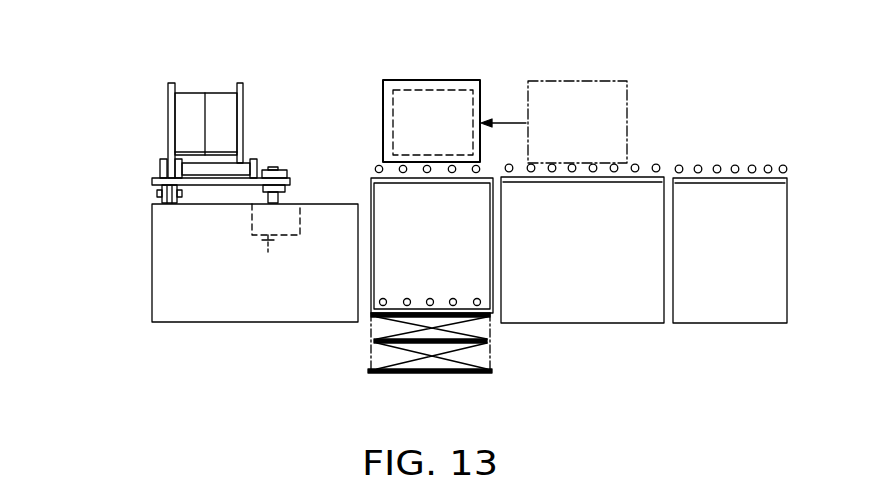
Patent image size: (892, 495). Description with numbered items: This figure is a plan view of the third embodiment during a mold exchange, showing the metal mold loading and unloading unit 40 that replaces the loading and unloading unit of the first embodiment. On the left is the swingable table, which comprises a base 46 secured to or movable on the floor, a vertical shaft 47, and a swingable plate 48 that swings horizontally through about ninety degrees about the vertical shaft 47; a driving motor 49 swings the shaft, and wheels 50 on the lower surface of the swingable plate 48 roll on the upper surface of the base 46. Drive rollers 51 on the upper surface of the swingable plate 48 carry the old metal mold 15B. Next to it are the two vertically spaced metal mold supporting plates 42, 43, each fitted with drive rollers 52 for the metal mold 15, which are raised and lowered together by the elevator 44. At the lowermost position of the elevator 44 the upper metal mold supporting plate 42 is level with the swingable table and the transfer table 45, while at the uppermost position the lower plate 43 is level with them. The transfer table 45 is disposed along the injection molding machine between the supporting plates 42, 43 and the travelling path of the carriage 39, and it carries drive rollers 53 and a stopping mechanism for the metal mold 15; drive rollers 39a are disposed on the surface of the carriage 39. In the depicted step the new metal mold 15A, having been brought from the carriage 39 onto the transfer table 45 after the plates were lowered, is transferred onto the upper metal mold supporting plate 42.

The metal mold 15 is at (577, 80).
The new metal mold 15A is at (432, 82).
The old metal mold 15B is at (198, 91).
The carriage 39 is at (735, 311).
The drive rollers 39a is at (718, 163).
The metal mold loading and unloading unit 40 is at (353, 95).
The metal mold supporting plate 42 is at (418, 183).
The metal mold supporting plate 43 is at (443, 307).
The elevator 44 is at (440, 358).
The transfer table 45 is at (582, 313).
The base 46 is at (258, 307).
The vertical shaft 47 is at (280, 169).
The swingable plate 48 is at (153, 180).
The driving motor 49 is at (276, 243).
The wheels 50 is at (168, 191).
The drive rollers 51 is at (246, 162).
The drive rollers 52 is at (375, 167).
The drive rollers 53 is at (636, 163).